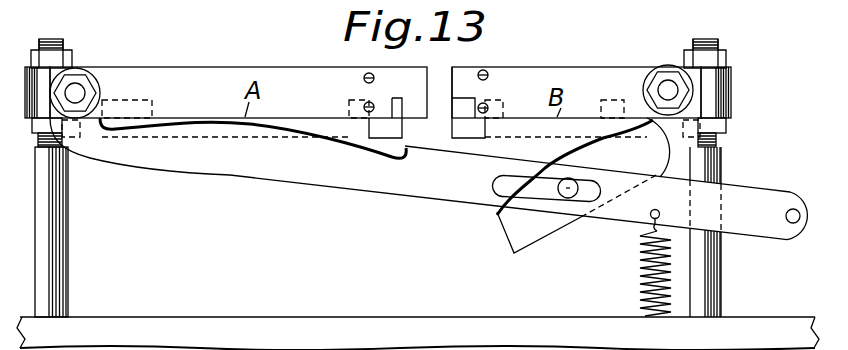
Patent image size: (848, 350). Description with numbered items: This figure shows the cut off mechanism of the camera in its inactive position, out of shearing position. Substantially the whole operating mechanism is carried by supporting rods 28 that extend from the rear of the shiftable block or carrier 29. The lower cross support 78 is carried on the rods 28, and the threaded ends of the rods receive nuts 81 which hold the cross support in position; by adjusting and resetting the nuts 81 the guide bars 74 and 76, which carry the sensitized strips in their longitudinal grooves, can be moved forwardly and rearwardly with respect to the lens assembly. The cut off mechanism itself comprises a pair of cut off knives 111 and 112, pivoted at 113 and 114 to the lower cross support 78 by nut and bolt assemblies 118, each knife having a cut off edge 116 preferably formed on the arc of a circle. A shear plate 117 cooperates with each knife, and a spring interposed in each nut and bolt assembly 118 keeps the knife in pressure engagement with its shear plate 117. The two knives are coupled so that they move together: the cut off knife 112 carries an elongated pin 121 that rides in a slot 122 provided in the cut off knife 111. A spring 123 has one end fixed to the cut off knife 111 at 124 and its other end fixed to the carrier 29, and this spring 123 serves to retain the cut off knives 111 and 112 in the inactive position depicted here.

The supporting rods 28 is at (68, 214).
The shiftable block or carrier 29 is at (347, 317).
The guide bar 74 is at (394, 103).
The guide bar 76 is at (468, 111).
The lower cross support 78 is at (733, 93).
The nuts 81 is at (71, 59).
The cut off knife 111 is at (276, 170).
The cut off knife 112 is at (513, 232).
The pivot 113 is at (82, 92).
The pivot 114 is at (645, 88).
The cut off edge 116 is at (326, 138).
The shear plate 117 is at (237, 70).
The nut and bolt assemblies 118 is at (84, 78).
The elongated pin 121 is at (597, 187).
The slot 122 is at (493, 178).
The spring 123 is at (638, 271).
The spring fixing point 124 is at (657, 210).